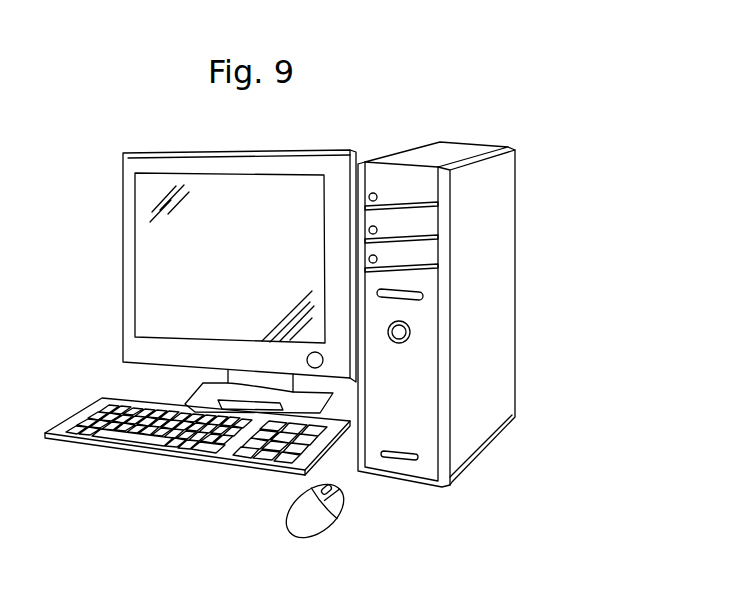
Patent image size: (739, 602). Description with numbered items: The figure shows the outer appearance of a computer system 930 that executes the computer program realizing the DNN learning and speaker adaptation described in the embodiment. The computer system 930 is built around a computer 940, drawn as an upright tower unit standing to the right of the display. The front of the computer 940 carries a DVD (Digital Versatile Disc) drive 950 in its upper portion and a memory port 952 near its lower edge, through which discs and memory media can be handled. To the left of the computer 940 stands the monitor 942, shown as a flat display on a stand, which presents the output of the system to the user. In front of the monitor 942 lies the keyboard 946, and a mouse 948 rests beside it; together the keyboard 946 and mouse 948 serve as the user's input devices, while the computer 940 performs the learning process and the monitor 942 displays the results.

The computer system 930 is at (553, 92).
The computer 940 is at (515, 152).
The monitor 942 is at (292, 150).
The keyboard 946 is at (140, 450).
The mouse 948 is at (327, 526).
The DVD drive 950 is at (412, 298).
The memory port 952 is at (398, 458).